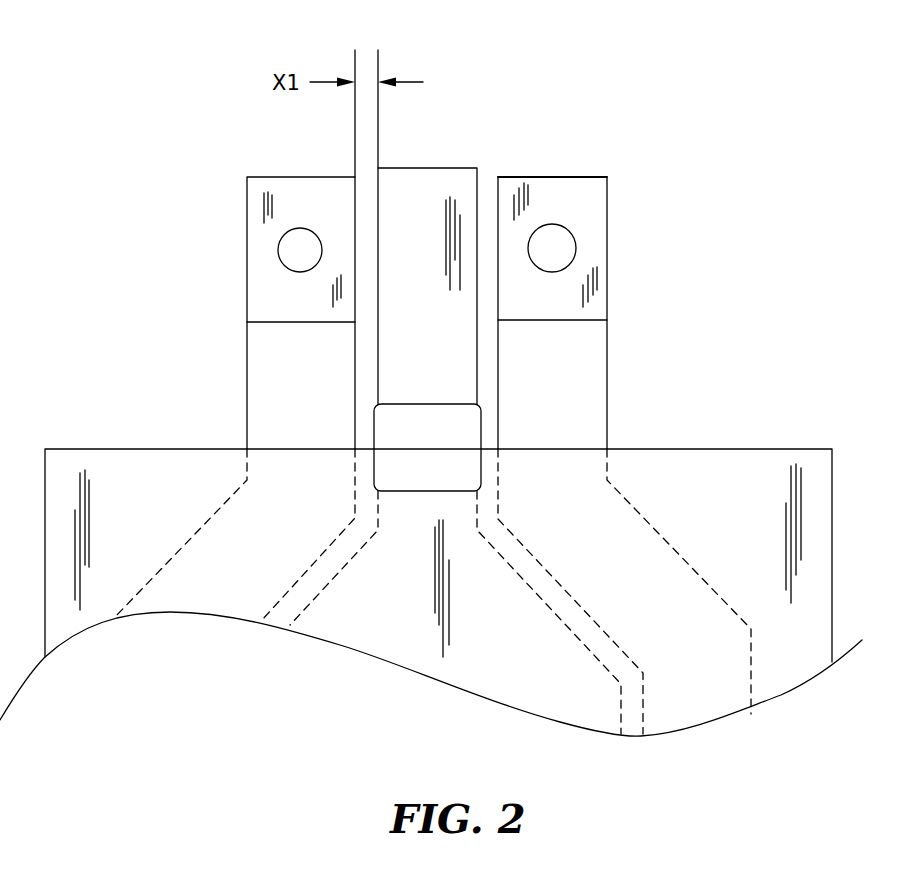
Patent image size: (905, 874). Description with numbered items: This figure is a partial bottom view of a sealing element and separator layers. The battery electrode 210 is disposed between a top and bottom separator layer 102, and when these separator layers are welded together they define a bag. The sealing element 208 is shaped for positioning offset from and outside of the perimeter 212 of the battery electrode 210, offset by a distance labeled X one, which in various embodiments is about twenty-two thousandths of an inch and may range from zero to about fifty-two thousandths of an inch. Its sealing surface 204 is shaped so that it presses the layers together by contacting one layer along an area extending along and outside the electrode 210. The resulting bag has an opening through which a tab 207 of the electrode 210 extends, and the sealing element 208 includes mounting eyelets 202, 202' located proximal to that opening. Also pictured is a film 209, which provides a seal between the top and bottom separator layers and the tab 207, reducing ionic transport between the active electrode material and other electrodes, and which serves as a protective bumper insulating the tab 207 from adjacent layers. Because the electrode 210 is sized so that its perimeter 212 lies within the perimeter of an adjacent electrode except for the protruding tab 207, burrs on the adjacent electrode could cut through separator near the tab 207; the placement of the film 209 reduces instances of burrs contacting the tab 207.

The separator layer 102 is at (752, 449).
The mounting eyelet 202 is at (264, 313).
The mounting eyelet 202' is at (600, 313).
The sealing surface 204 is at (433, 591).
The tab 207 is at (412, 168).
The sealing element 208 is at (584, 172).
The film 209 is at (405, 403).
The battery electrode 210 is at (378, 602).
The perimeter 212 is at (352, 530).